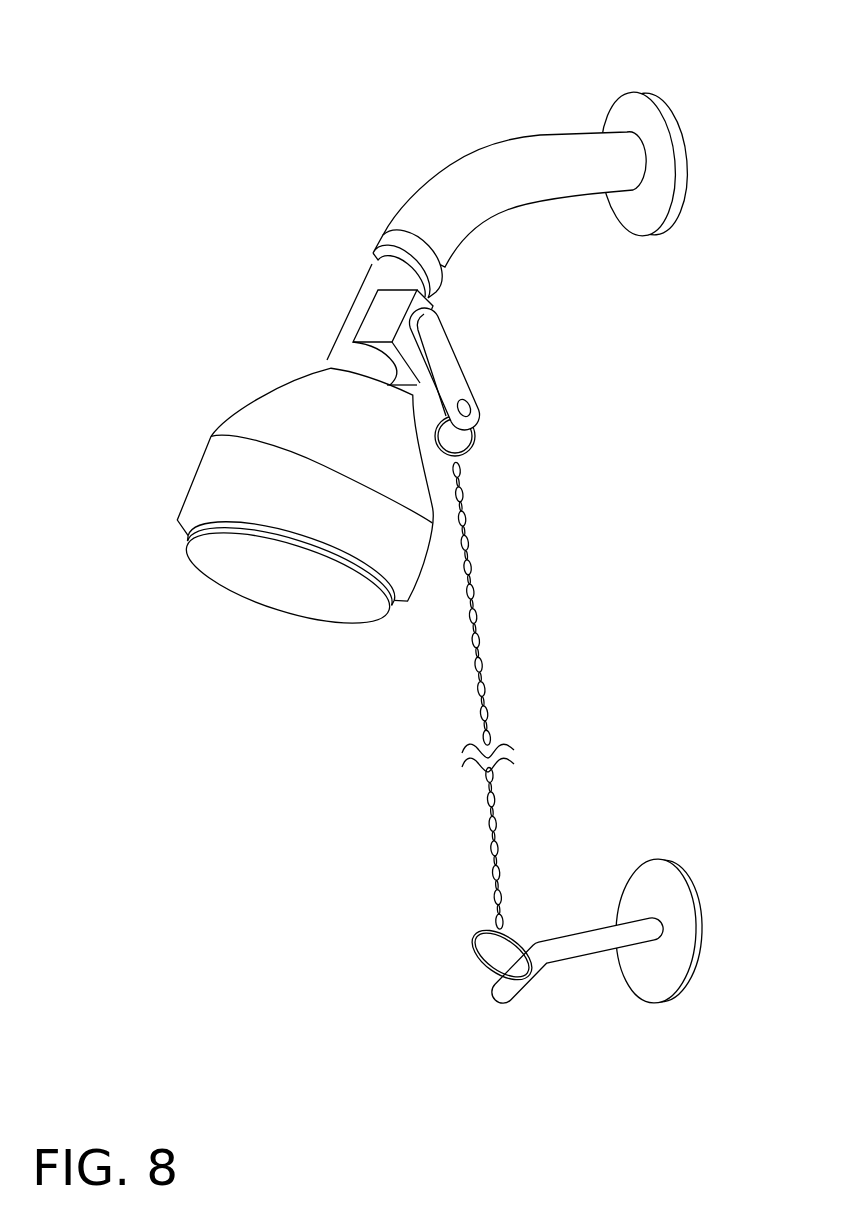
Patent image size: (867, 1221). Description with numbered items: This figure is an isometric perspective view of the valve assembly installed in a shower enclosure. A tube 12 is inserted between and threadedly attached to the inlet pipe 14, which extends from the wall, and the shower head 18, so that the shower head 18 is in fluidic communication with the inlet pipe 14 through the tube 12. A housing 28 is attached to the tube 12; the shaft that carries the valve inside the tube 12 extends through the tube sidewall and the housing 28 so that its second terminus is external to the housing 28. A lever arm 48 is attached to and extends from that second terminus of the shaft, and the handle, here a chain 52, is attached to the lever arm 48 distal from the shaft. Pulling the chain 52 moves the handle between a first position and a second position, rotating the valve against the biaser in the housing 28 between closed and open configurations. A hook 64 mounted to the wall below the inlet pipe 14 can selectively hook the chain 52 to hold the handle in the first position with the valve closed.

The inlet pipe 14 is at (509, 120).
The tube 12 is at (324, 314).
The housing 28 is at (372, 298).
The lever arm 48 is at (470, 351).
The shower head 18 is at (173, 460).
The chain 52 is at (490, 550).
The hook 64 is at (573, 976).